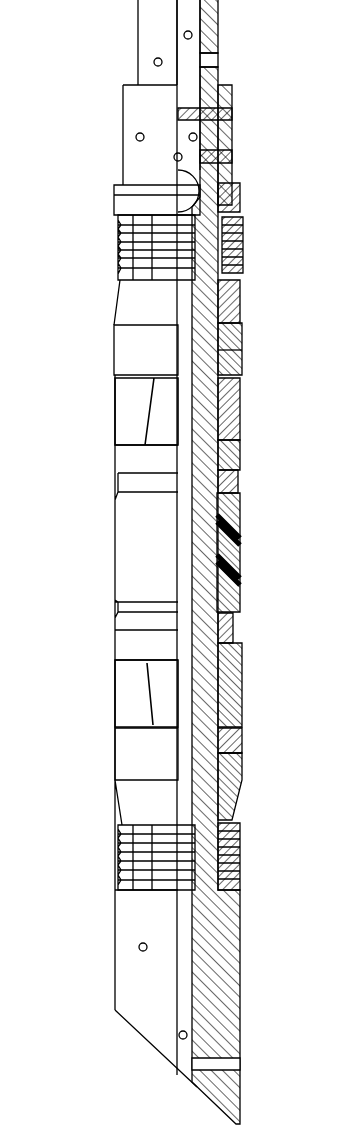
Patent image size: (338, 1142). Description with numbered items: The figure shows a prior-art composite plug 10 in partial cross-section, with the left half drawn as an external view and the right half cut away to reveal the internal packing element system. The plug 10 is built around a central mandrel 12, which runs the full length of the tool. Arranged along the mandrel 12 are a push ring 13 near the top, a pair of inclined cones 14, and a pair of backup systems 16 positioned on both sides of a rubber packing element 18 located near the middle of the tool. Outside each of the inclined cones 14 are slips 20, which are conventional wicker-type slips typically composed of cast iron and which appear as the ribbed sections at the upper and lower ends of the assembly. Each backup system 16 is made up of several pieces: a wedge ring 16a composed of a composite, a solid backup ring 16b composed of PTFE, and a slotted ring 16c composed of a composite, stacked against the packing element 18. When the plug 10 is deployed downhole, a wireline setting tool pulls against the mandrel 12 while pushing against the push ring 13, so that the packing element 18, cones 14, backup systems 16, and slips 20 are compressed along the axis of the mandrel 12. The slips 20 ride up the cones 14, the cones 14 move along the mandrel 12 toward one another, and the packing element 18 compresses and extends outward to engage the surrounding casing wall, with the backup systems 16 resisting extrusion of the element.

The composite plug 10 is at (62, 70).
The mandrel 12 is at (137, 72).
The push ring 13 is at (115, 205).
The cones 14 is at (115, 350).
The backup systems 16 is at (88, 418).
The wedge ring 16a is at (238, 488).
The solid backup ring 16b is at (240, 458).
The slotted ring 16c is at (240, 395).
The packing element 18 is at (240, 545).
The slips 20 is at (118, 258).